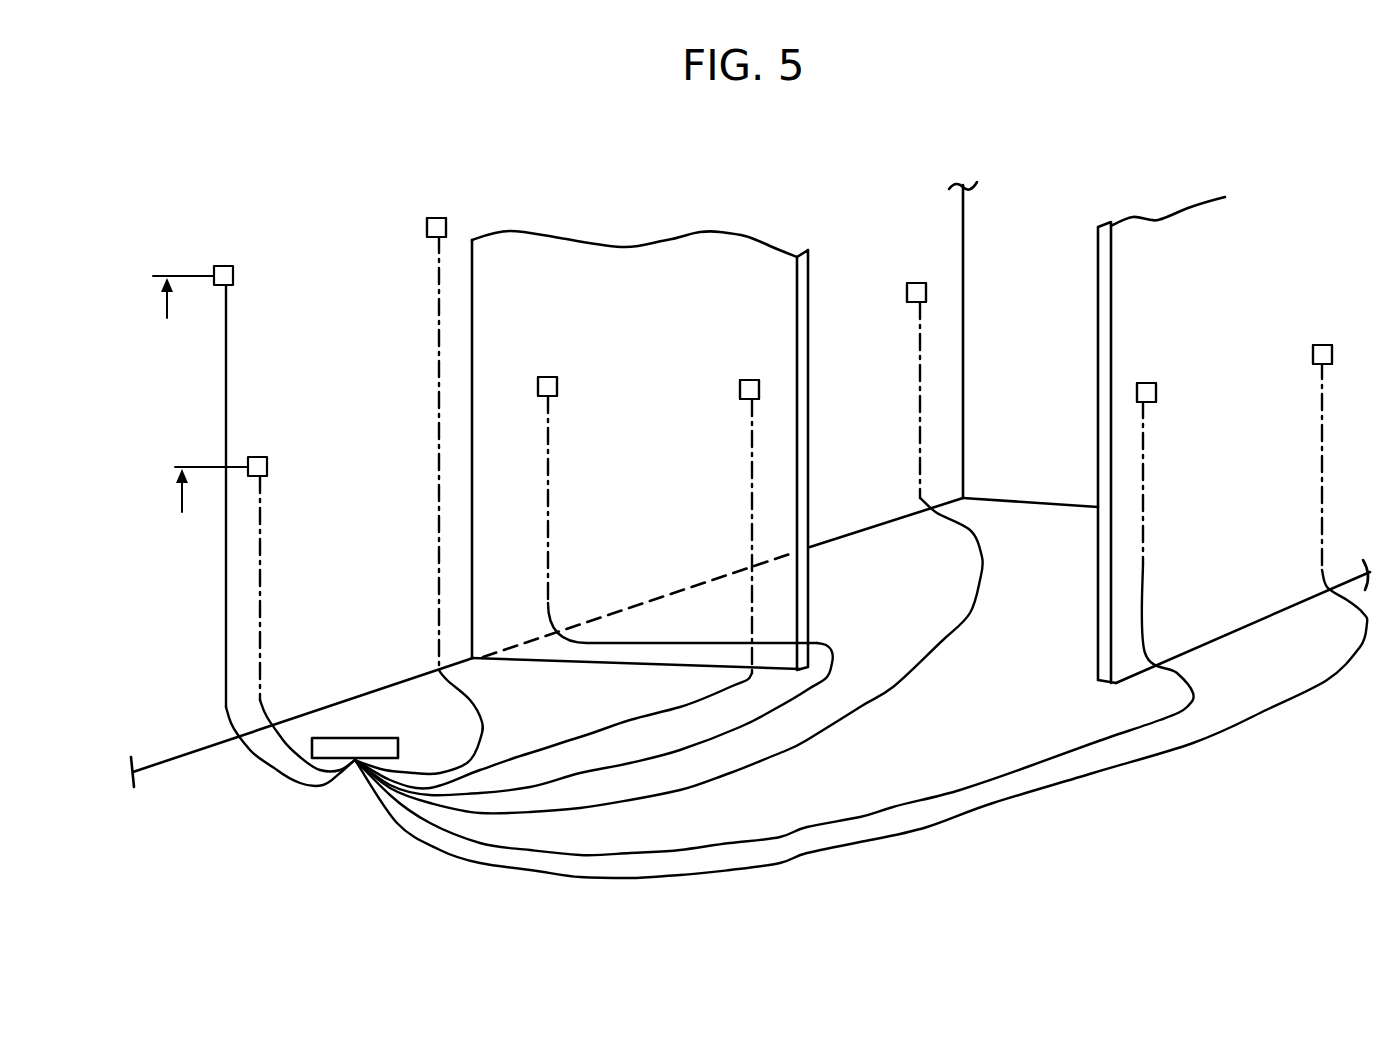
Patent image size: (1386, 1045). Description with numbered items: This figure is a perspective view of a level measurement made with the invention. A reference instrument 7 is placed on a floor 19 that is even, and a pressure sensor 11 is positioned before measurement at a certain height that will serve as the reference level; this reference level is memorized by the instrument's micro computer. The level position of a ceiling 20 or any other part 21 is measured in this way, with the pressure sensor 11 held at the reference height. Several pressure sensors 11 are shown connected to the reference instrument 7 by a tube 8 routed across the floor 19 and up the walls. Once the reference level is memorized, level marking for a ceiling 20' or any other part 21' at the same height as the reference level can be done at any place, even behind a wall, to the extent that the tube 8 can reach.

The reference instrument 7 is at (378, 737).
The tube 8 is at (293, 783).
The pressure sensor 11 is at (233, 276).
The floor 19 is at (701, 844).
The ceiling 20 is at (170, 306).
The ceiling level marking 20' is at (479, 205).
The other part 21 is at (195, 502).
The other part level marking 21' is at (907, 386).